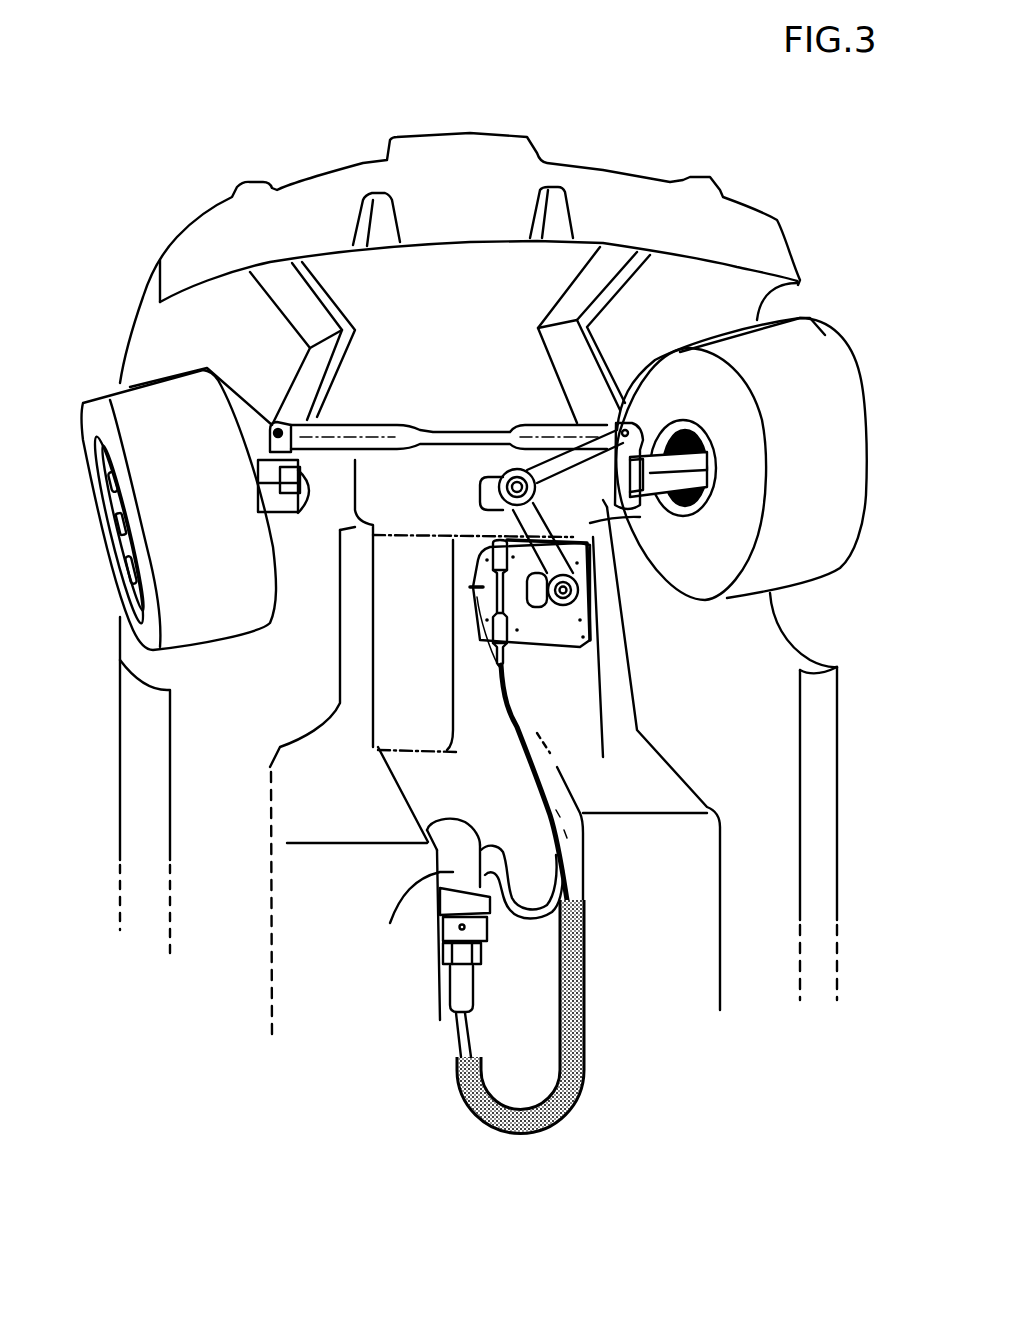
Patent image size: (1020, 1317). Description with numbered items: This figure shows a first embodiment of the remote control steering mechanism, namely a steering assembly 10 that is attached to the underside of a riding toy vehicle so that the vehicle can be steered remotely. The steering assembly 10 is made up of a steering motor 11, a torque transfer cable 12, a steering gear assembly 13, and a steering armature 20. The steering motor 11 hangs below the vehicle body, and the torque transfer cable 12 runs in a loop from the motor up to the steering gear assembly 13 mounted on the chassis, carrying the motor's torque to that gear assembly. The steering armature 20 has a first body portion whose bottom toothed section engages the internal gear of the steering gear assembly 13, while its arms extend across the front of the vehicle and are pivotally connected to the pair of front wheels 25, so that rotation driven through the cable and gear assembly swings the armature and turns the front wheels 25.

The steering assembly 10 is at (597, 1108).
The steering motor 11 is at (445, 875).
The torque transfer cable 12 is at (548, 786).
The steering gear assembly 13 is at (557, 623).
The steering armature 20 is at (457, 479).
The front wheels 25 is at (114, 413).